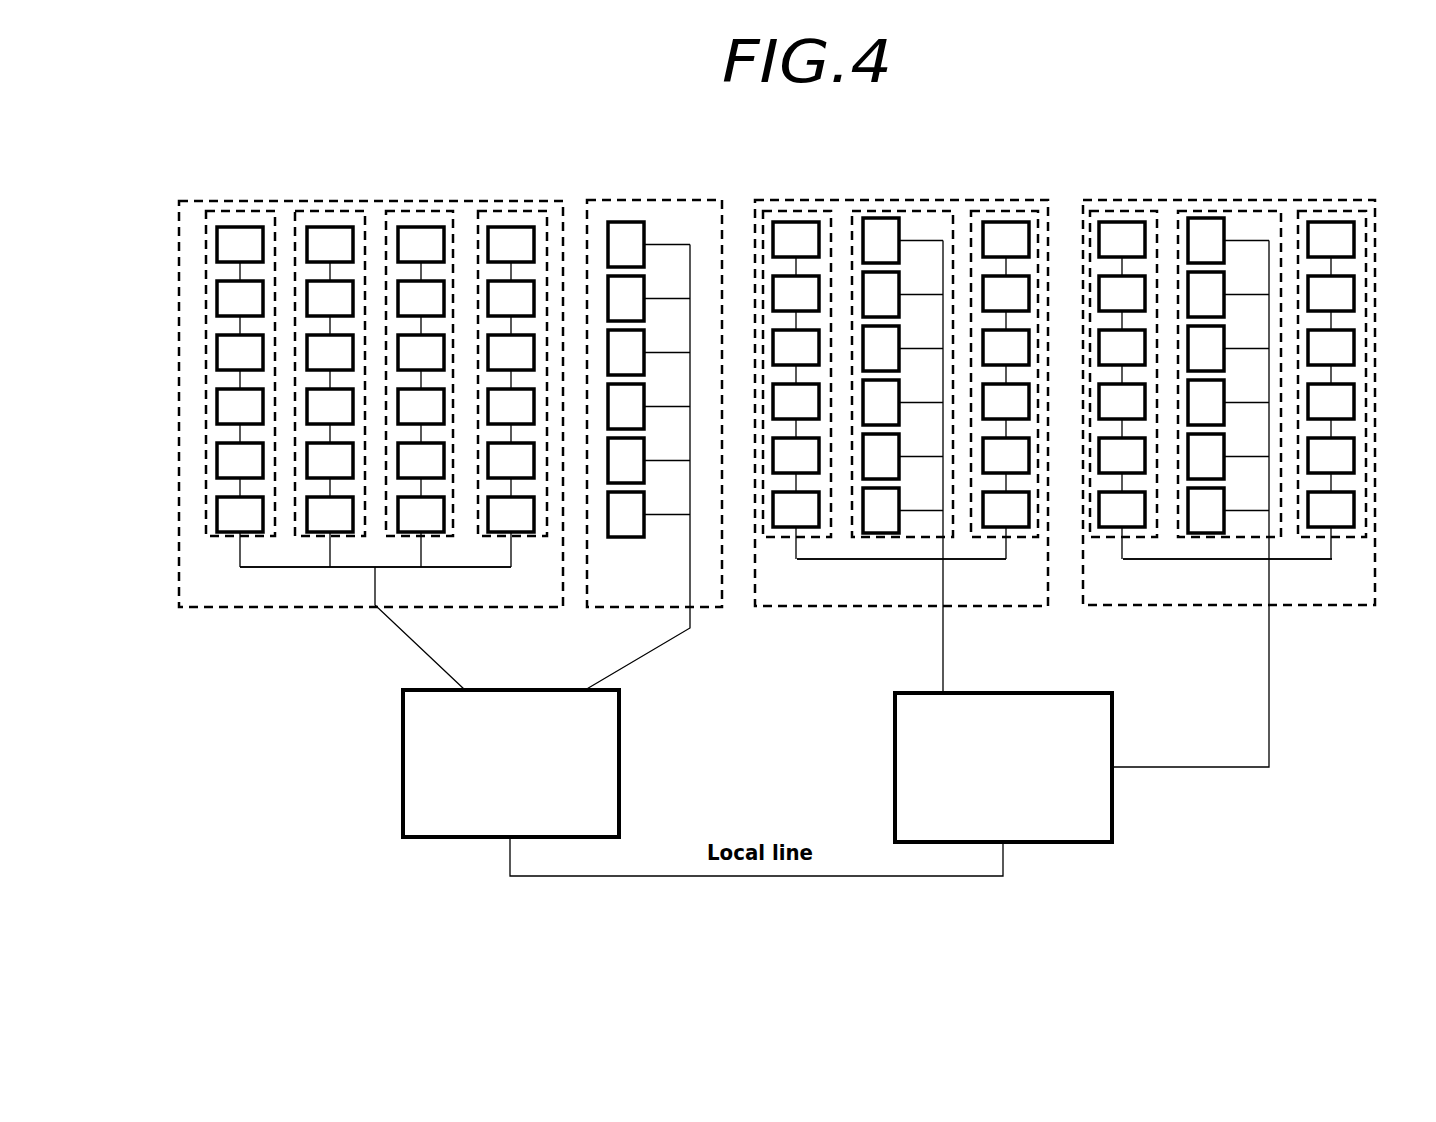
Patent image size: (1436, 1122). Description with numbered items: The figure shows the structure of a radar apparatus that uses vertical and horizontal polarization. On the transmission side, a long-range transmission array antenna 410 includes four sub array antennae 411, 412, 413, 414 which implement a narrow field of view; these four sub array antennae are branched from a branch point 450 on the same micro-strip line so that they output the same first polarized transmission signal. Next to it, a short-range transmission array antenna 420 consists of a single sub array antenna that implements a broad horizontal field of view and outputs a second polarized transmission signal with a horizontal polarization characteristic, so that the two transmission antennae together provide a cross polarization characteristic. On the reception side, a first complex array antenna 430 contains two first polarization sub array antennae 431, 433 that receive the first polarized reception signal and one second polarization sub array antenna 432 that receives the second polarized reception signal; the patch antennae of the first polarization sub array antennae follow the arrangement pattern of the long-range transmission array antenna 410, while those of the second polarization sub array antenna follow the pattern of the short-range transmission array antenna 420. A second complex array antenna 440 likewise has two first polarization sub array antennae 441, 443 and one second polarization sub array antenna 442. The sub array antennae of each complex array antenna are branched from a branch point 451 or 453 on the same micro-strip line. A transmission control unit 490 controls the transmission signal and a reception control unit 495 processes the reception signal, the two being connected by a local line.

The long-range transmission array antenna 410 is at (197, 202).
The sub array antenna 411 is at (263, 212).
The sub array antenna 412 is at (352, 212).
The sub array antenna 413 is at (441, 212).
The sub array antenna 414 is at (533, 212).
The short-range transmission array antenna 420 is at (698, 201).
The first complex array antenna 430 is at (767, 201).
The first polarization sub array antenna 431 is at (817, 212).
The second polarization sub array antenna 432 is at (920, 212).
The first polarization sub array antenna 433 is at (1010, 212).
The second complex array antenna 440 is at (1358, 201).
The first polarization sub array antenna 441 is at (1106, 212).
The second polarization sub array antenna 442 is at (1209, 212).
The first polarization sub array antenna 443 is at (1310, 212).
The branch point 450 is at (375, 567).
The branch point 451 is at (935, 559).
The branch point 453 is at (1272, 560).
The transmission control unit 490 is at (441, 840).
The reception control unit 495 is at (1082, 843).